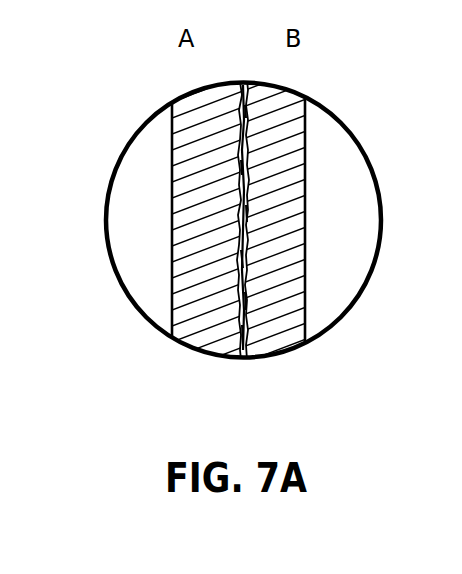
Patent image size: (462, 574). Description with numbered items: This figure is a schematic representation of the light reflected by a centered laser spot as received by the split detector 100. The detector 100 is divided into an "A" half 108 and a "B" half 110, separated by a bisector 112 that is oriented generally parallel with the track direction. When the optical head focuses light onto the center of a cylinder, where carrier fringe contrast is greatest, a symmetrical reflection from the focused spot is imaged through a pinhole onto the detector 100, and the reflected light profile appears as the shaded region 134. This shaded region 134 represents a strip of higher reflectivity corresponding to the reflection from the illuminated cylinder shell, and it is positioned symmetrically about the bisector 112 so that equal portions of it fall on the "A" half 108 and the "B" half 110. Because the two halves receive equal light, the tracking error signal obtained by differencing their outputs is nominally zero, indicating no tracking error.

The detector 100 is at (128, 138).
The "A" half 108 is at (145, 280).
The "B" half 110 is at (323, 293).
The bisector 112 is at (243, 355).
The shaded region 134 is at (307, 137).